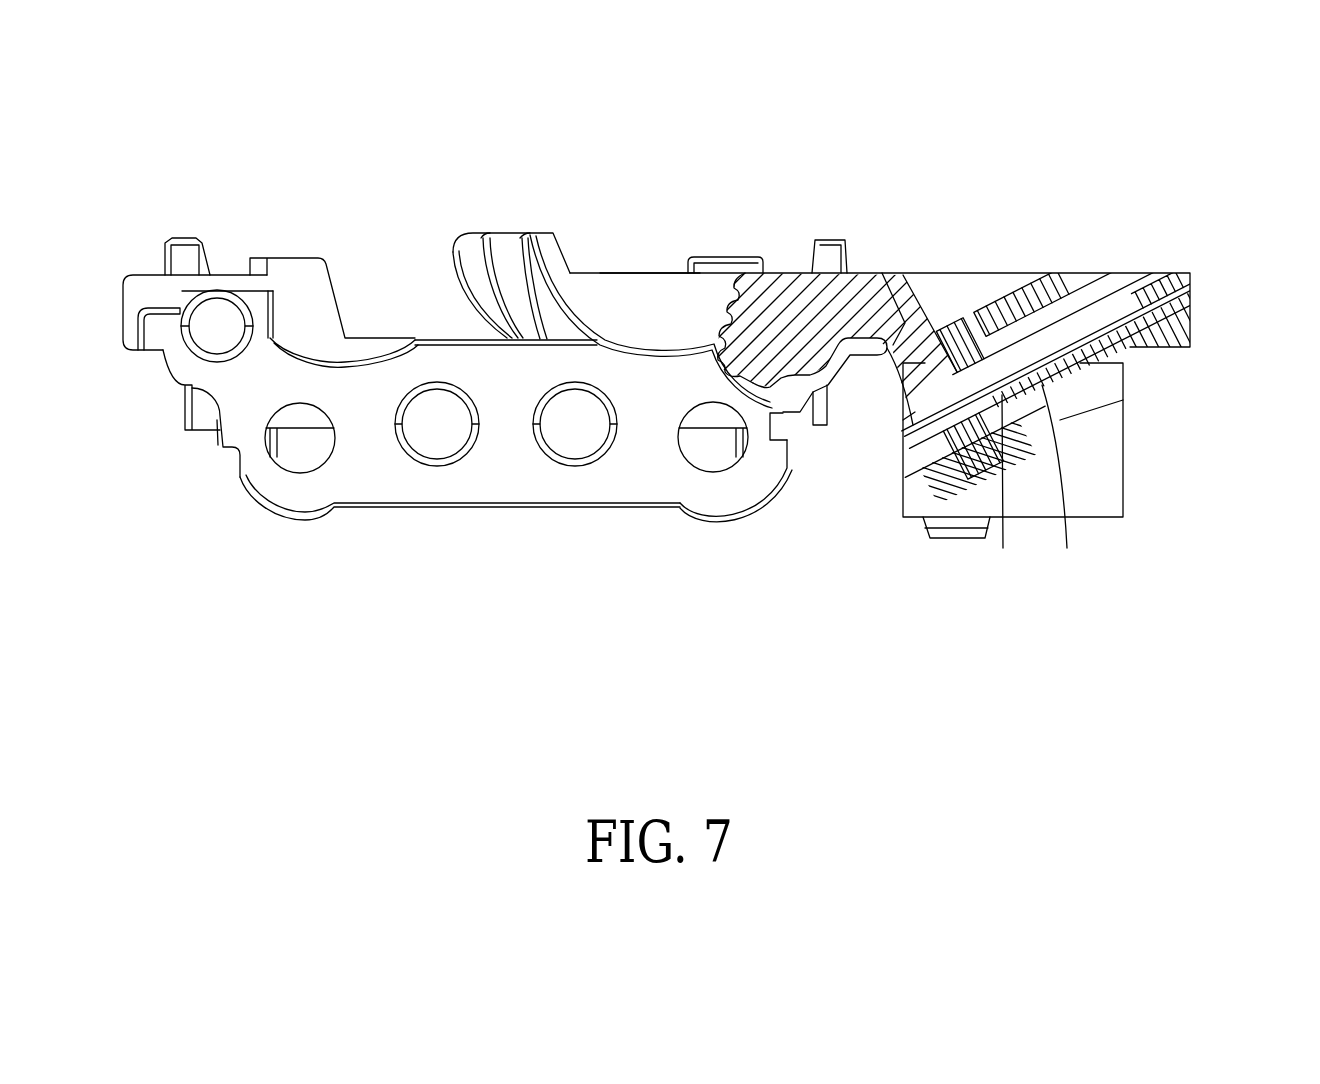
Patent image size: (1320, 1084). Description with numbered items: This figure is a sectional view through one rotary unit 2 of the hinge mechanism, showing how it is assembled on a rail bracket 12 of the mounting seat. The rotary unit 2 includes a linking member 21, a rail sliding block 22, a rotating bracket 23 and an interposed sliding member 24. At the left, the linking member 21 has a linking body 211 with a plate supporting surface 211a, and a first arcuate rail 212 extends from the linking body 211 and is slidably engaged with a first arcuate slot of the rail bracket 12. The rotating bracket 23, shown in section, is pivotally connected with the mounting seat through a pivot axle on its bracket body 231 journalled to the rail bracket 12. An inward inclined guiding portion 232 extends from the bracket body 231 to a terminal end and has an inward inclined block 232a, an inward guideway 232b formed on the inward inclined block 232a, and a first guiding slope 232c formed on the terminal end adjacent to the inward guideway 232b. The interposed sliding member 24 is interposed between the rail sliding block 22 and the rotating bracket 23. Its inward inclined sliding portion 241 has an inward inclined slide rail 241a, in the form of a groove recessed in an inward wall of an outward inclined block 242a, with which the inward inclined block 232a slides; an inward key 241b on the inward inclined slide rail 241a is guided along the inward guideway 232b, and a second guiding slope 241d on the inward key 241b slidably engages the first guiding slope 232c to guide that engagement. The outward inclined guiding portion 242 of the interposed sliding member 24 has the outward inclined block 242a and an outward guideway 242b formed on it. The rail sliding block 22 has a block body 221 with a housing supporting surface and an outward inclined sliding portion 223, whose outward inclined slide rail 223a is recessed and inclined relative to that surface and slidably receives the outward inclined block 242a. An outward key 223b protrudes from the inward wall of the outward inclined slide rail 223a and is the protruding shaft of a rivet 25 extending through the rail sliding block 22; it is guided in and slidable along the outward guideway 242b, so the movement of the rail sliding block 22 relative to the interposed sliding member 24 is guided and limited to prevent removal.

The rail bracket 12 is at (656, 382).
The linking member 21 is at (612, 273).
The first arcuate rail 212 is at (520, 278).
The linking body 211 is at (628, 307).
The plate supporting surface 211a is at (667, 273).
The rotating bracket 23 is at (806, 295).
The bracket body 231 is at (880, 297).
The rotary unit 2 is at (1023, 399).
The rail sliding block 22 is at (1065, 499).
The block body 221 is at (1107, 446).
The outward inclined sliding portion 223 is at (1037, 510).
The outward inclined slide rail 223a is at (1071, 483).
The outward key 223b is at (1003, 488).
The rivet 25 is at (977, 413).
The interposed sliding member 24 is at (1033, 368).
The inward inclined sliding portion 241 is at (1032, 347).
The inward inclined slide rail 241a is at (1052, 388).
The inward key 241b is at (960, 345).
The second guiding slope 241d is at (907, 427).
The outward inclined guiding portion 242 is at (993, 441).
The outward inclined block 242a is at (973, 446).
The outward guideway 242b is at (998, 451).
The inward inclined guiding portion 232 is at (1083, 297).
The inward inclined block 232a is at (1063, 282).
The inward guideway 232b is at (1019, 304).
The first guiding slope 232c is at (1162, 288).